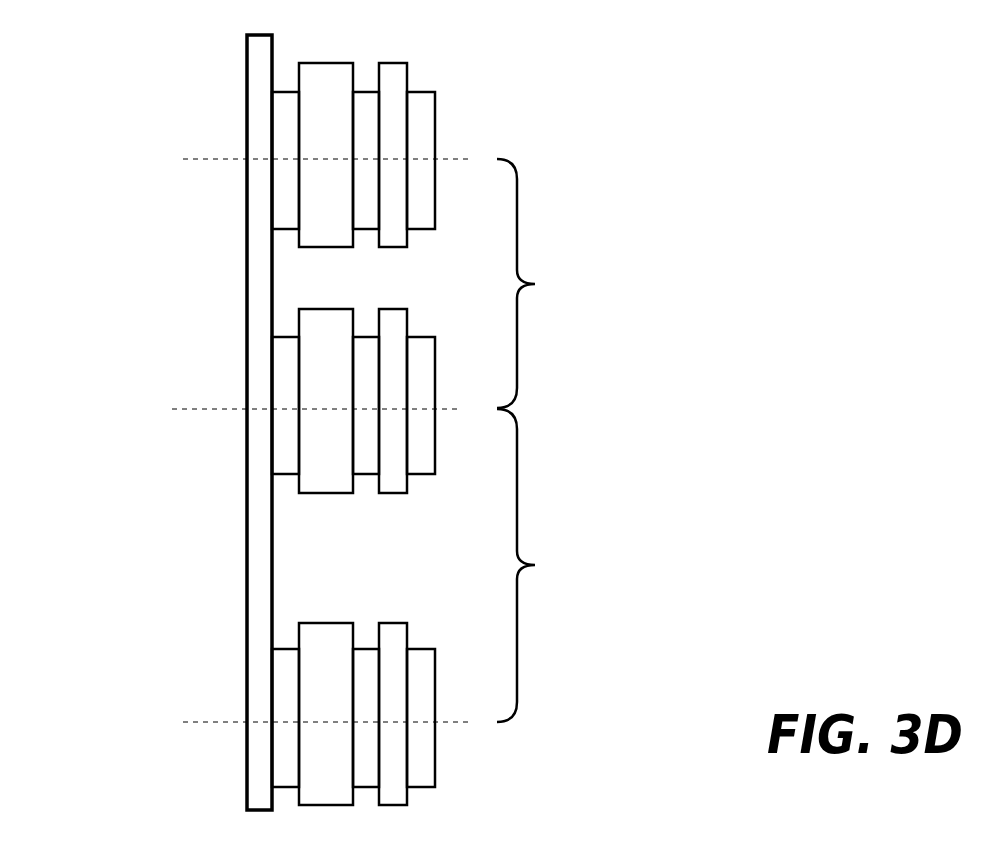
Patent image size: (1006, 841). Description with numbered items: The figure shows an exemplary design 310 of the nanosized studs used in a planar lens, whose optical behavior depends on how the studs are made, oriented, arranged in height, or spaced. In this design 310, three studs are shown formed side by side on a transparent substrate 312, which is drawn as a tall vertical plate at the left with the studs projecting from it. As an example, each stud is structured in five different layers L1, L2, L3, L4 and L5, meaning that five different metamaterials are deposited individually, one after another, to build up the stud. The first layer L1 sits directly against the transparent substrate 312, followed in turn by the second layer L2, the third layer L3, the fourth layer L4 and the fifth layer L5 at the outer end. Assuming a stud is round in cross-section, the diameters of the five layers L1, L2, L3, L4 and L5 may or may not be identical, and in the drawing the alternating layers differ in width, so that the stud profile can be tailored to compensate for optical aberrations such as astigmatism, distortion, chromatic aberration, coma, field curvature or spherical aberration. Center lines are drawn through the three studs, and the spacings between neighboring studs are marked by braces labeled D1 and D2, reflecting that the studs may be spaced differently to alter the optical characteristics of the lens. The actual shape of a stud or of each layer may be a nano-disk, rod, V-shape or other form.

The exemplary design of the nanosized studs 310 is at (447, 391).
The transparent substrate 312 is at (247, 198).
The first layer L1 is at (286, 439).
The second layer L2 is at (326, 420).
The third layer L3 is at (365, 439).
The fourth layer L4 is at (396, 420).
The fifth layer L5 is at (422, 439).
The first distance D1 is at (542, 283).
The second distance D2 is at (542, 565).